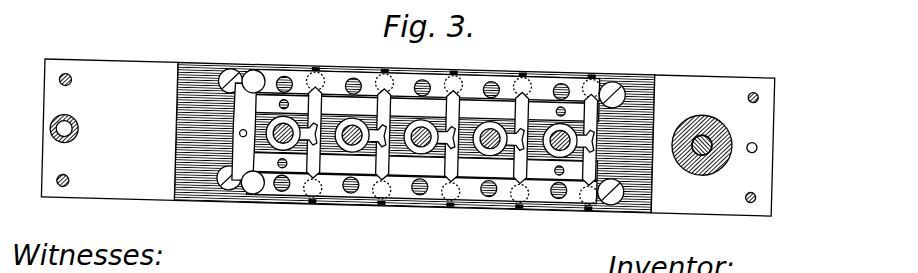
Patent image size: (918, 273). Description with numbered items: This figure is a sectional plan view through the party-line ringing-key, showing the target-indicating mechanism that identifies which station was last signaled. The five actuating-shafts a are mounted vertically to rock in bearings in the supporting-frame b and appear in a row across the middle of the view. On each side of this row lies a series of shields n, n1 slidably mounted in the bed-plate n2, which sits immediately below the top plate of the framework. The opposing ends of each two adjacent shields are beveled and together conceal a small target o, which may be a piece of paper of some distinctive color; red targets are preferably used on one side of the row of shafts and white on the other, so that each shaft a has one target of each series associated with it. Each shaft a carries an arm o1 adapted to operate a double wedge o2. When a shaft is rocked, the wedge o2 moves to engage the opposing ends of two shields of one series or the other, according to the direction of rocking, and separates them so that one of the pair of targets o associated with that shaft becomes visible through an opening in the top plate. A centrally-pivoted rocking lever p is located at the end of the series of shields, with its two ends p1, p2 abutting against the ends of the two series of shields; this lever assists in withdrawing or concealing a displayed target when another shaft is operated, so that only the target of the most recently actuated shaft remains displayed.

The supporting-frame b is at (109, 129).
The bed-plate n2 is at (209, 188).
The shield n is at (298, 68).
The shield n1 is at (290, 188).
The target o is at (507, 196).
The arm o1 is at (303, 123).
The double wedge o2 is at (523, 105).
The actuating-shaft a is at (280, 141).
The rocking lever p is at (236, 119).
The end of rocking lever p1 is at (253, 72).
The end of rocking lever p2 is at (255, 188).